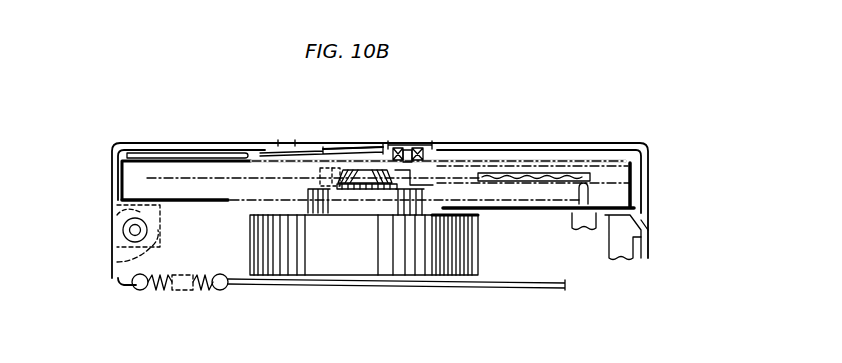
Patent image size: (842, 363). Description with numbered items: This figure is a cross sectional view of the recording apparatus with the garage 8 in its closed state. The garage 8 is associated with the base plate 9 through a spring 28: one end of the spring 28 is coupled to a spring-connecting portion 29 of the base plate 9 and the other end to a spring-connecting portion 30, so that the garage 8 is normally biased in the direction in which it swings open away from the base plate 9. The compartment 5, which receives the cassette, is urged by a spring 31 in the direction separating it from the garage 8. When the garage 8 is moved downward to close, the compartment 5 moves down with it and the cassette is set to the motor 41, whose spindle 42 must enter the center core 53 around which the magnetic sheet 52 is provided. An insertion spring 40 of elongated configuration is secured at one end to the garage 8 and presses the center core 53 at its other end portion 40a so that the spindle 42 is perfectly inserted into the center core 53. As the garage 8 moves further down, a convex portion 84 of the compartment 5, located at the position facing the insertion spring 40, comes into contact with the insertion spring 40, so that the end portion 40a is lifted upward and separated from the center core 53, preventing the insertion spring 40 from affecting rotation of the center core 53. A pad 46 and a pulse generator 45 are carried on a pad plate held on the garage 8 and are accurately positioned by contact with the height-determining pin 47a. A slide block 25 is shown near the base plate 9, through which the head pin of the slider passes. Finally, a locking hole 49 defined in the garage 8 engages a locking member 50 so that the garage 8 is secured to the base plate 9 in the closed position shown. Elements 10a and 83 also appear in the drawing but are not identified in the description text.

The compartment 5 is at (118, 160).
The garage 8 is at (113, 147).
The base plate 9 is at (500, 288).
The pivot shaft 10a is at (128, 233).
The slide block 25 is at (586, 231).
The spring 28 is at (193, 292).
The spring-connecting portion 29 is at (227, 290).
The spring-connecting portion 30 is at (137, 290).
The spring 31 is at (118, 263).
The insertion spring 40 is at (284, 143).
The one end portion of insertion spring 40a is at (354, 150).
The motor 41 is at (422, 277).
The spindle 42 is at (364, 170).
The pulse generator 45 is at (407, 145).
The pad 46 is at (528, 174).
The height-determining pin 47a is at (589, 190).
The locking hole 49 is at (649, 222).
The locking member 50 is at (644, 227).
The magnetic sheet 52 is at (176, 178).
The center core 53 is at (328, 170).
The side wall 83 is at (650, 177).
The convex portion 84 is at (238, 153).